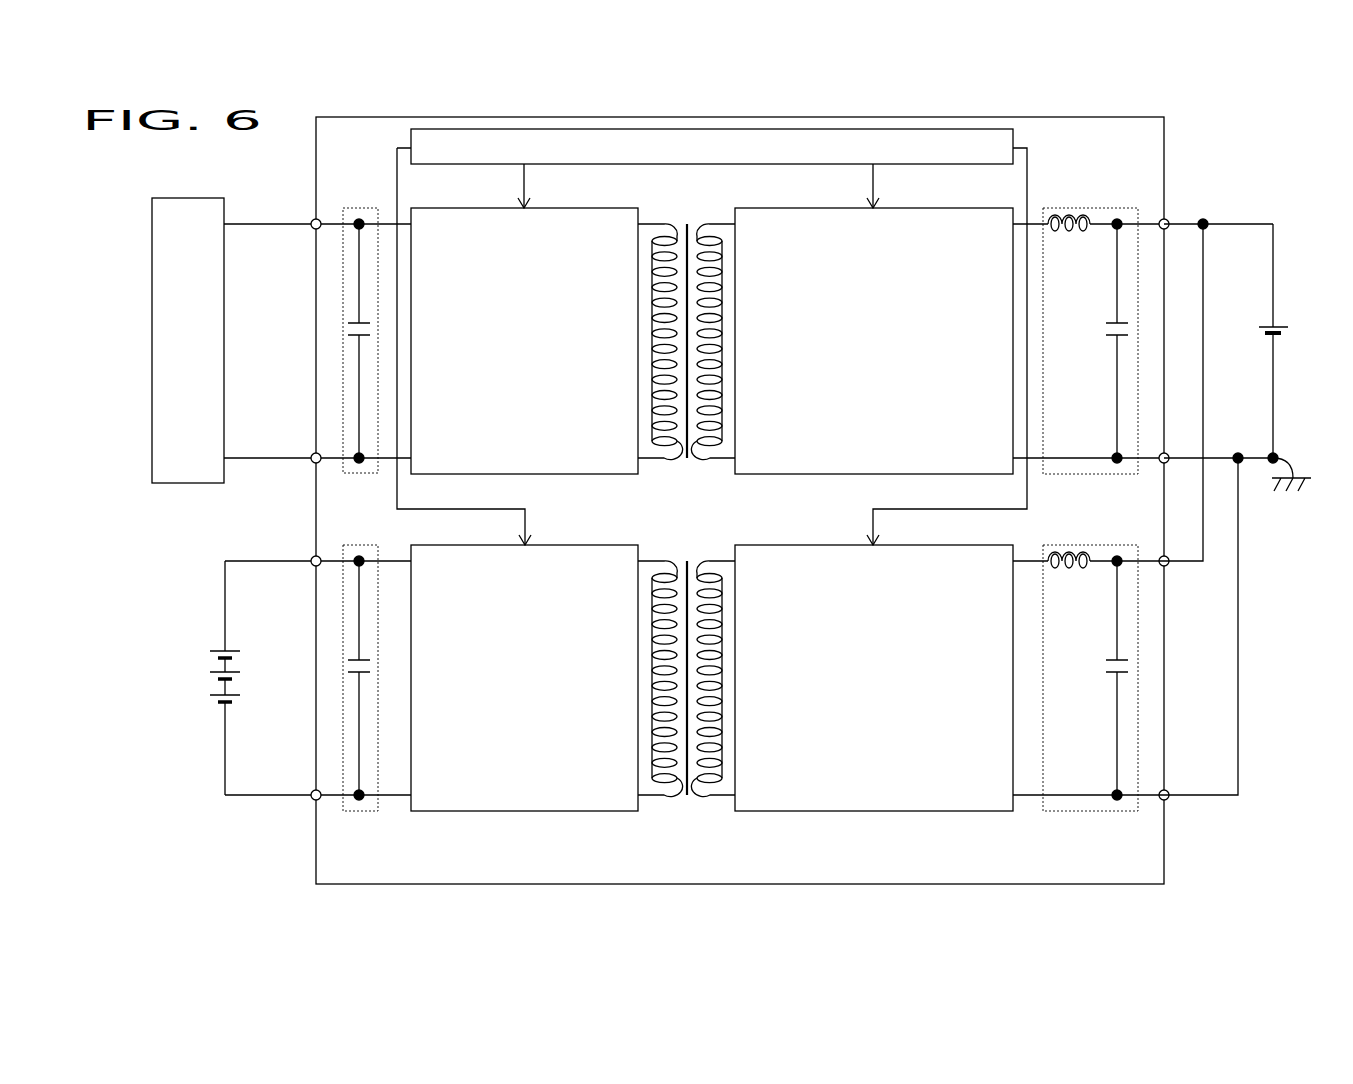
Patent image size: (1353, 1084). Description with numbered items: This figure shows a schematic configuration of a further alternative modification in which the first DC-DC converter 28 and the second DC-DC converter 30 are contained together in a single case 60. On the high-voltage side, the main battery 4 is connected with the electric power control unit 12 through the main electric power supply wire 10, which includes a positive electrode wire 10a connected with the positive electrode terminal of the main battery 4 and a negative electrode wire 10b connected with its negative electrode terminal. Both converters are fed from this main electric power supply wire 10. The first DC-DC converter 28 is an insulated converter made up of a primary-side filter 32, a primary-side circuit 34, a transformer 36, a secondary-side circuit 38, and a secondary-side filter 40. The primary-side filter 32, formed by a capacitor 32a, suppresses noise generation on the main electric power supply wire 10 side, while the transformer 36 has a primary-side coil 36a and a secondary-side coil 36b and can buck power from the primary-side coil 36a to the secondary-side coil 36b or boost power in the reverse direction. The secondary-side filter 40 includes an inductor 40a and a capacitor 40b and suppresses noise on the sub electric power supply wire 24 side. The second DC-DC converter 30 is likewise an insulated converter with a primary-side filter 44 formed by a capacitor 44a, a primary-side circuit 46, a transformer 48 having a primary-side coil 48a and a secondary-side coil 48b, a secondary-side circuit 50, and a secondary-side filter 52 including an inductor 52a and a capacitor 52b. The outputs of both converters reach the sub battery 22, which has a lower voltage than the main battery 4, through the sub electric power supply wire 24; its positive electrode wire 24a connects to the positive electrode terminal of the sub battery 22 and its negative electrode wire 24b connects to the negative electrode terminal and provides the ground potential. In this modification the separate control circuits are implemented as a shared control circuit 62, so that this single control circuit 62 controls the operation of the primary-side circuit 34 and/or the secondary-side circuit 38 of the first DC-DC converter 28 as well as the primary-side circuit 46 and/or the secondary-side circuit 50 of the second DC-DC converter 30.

The main battery 4 is at (222, 651).
The main electric power supply wire 10 is at (312, 178).
The positive electrode wire 10a is at (253, 222).
The negative electrode wire 10b is at (272, 458).
The electric power control unit 12 is at (186, 198).
The sub battery 22 is at (1278, 324).
The sub electric power supply wire 24 is at (1313, 178).
The positive electrode wire 24a is at (1238, 224).
The negative electrode wire 24b is at (1249, 458).
The first DC-DC converter 28 is at (1097, 143).
The second DC-DC converter 30 is at (1092, 846).
The primary-side filter 32 is at (357, 320).
The capacitor 32a is at (357, 321).
The primary-side circuit 34 is at (436, 208).
The transformer 36 is at (688, 310).
The primary-side coil 36a is at (654, 262).
The secondary-side coil 36b is at (722, 262).
The secondary-side circuit 38 is at (933, 208).
The secondary-side filter 40 is at (1088, 318).
The inductor 40a is at (1060, 212).
The capacitor 40b is at (1112, 321).
The primary-side filter 44 is at (356, 654).
The capacitor 44a is at (357, 658).
The primary-side circuit 46 is at (565, 545).
The transformer 48 is at (688, 641).
The primary-side coil 48a is at (654, 600).
The secondary-side coil 48b is at (722, 600).
The secondary-side circuit 50 is at (841, 545).
The secondary-side filter 52 is at (1088, 654).
The inductor 52a is at (1060, 547).
The capacitor 52b is at (1112, 658).
The single case 60 is at (1167, 218).
The shared control circuit 62 is at (1014, 135).